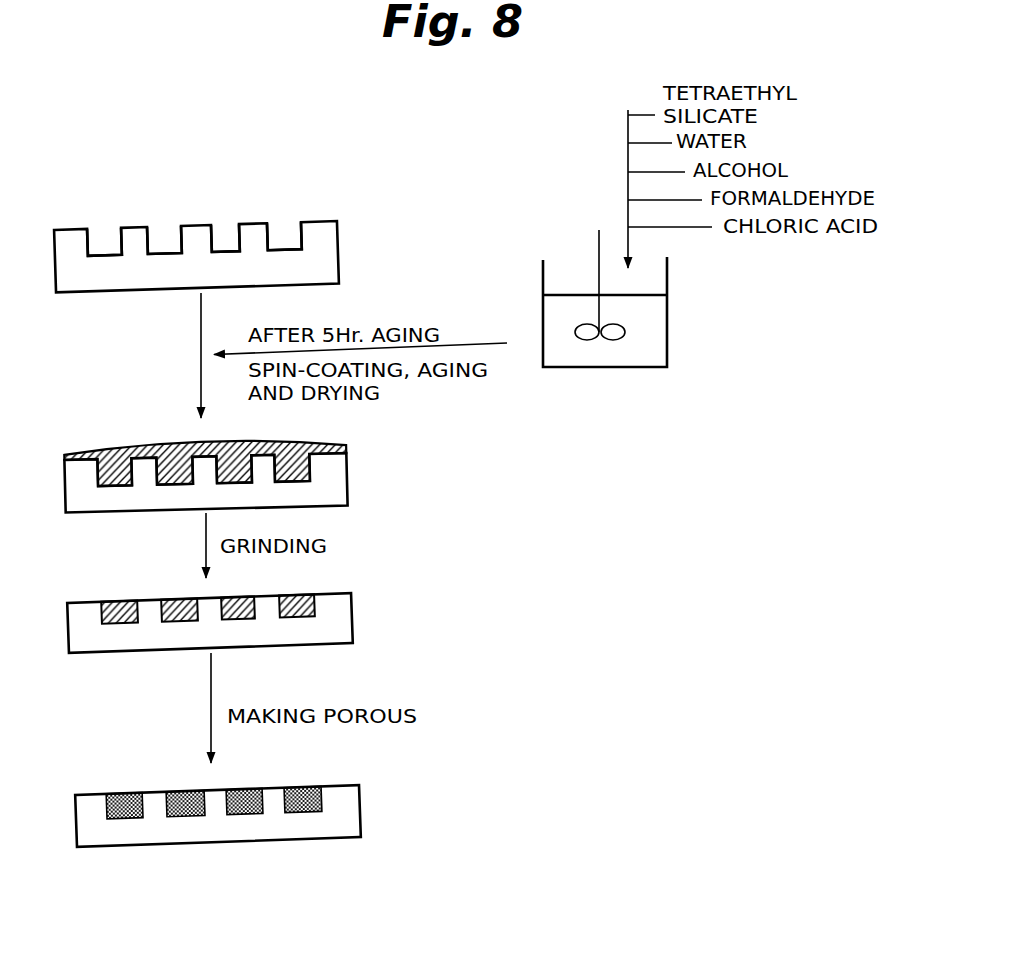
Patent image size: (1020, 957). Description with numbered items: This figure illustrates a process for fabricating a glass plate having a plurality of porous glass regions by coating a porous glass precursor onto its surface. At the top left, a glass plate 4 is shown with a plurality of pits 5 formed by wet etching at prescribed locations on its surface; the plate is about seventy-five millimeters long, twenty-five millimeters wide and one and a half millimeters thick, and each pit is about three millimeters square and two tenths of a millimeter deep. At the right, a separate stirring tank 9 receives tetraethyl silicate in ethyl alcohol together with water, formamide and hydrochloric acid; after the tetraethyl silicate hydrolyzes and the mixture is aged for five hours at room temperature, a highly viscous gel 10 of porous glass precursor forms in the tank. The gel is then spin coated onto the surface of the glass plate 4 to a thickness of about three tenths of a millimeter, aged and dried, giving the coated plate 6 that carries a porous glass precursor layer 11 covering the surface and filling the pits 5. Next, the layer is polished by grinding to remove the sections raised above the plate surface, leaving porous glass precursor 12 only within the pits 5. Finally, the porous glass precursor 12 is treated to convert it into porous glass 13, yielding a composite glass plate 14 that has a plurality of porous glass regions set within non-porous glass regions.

The glass plate 4 is at (338, 250).
The pits 5 is at (164, 240).
The grooved glass substrate with coating 6 is at (199, 452).
The mixing tank 9 is at (640, 367).
The gel 10 is at (650, 328).
The porous glass precursor layer 11 is at (317, 440).
The porous glass precursor 12 is at (297, 595).
The porous glass 13 is at (307, 785).
The composite glass plate 14 is at (342, 860).